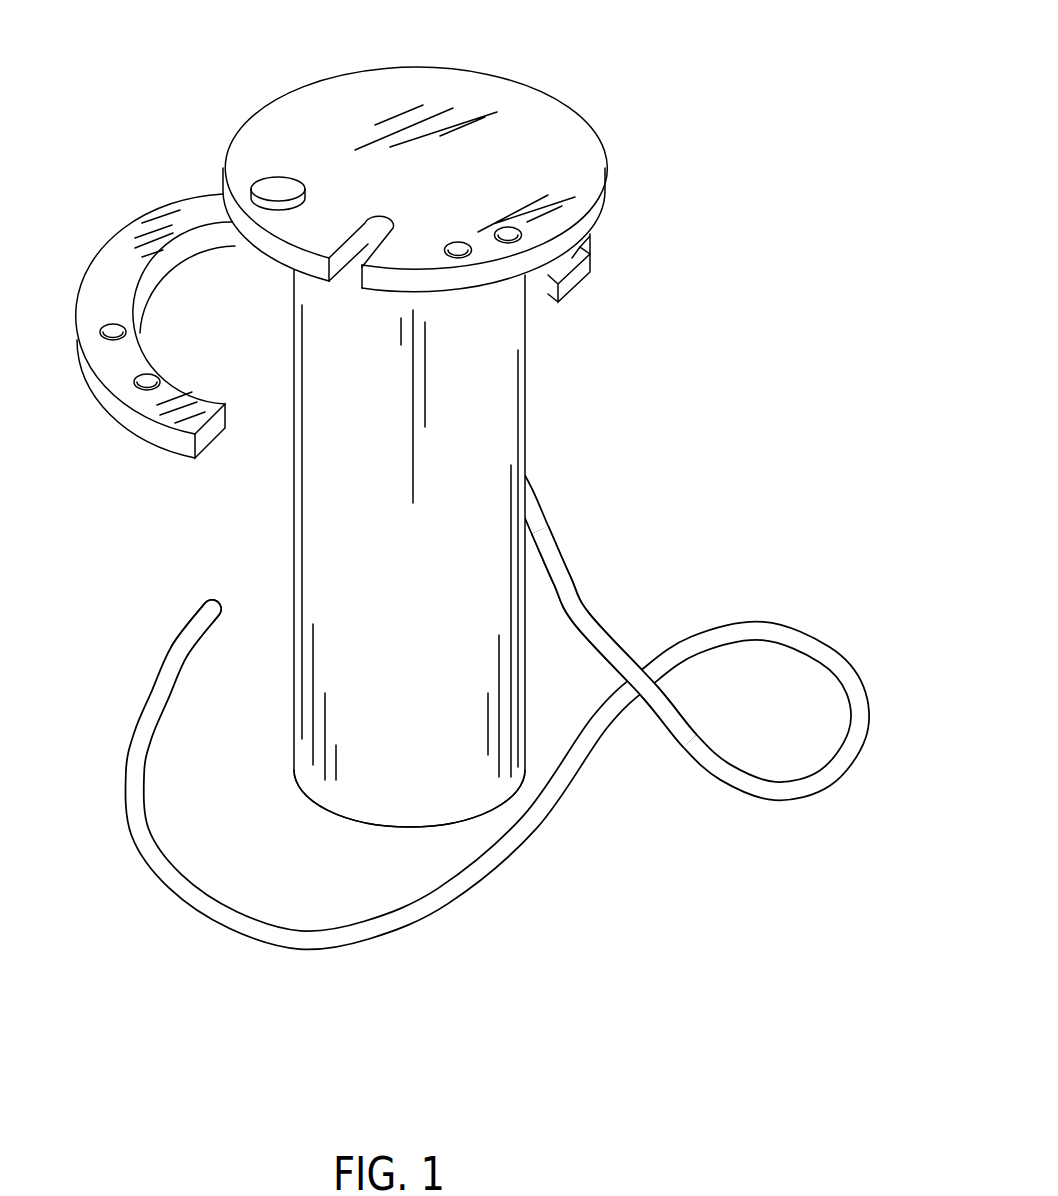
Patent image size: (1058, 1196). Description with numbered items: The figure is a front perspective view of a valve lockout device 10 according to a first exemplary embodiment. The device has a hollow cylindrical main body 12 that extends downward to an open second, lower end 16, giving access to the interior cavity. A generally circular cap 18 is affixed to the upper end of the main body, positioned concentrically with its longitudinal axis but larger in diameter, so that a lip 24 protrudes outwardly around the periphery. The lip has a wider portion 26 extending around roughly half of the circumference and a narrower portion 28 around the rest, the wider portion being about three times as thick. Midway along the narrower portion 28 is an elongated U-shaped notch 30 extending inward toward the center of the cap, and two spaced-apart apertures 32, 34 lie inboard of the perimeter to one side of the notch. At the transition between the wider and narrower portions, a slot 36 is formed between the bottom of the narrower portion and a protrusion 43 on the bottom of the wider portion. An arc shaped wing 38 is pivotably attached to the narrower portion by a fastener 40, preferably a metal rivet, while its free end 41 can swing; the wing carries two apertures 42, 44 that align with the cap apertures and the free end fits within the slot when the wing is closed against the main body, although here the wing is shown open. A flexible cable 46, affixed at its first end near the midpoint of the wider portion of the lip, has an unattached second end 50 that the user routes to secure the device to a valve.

The valve lockout device 10 is at (635, 72).
The hollow cylindrical main body 12 is at (474, 565).
The second, lower end 16 is at (345, 816).
The circular cap 18 is at (435, 182).
The lip 24 is at (443, 288).
The wider portion 26 is at (594, 218).
The narrower portion 28 is at (287, 260).
The U-shaped notch 30 is at (343, 253).
The aperture 32 is at (455, 242).
The aperture 34 is at (505, 227).
The slot 36 is at (572, 258).
The arc shaped wing 38 is at (147, 342).
The fastener 40 is at (272, 187).
The free end 41 is at (200, 421).
The aperture 42 is at (113, 332).
The protrusion 43 is at (629, 304).
The aperture 44 is at (145, 384).
The cable 46 is at (497, 685).
The second end 50 is at (220, 607).